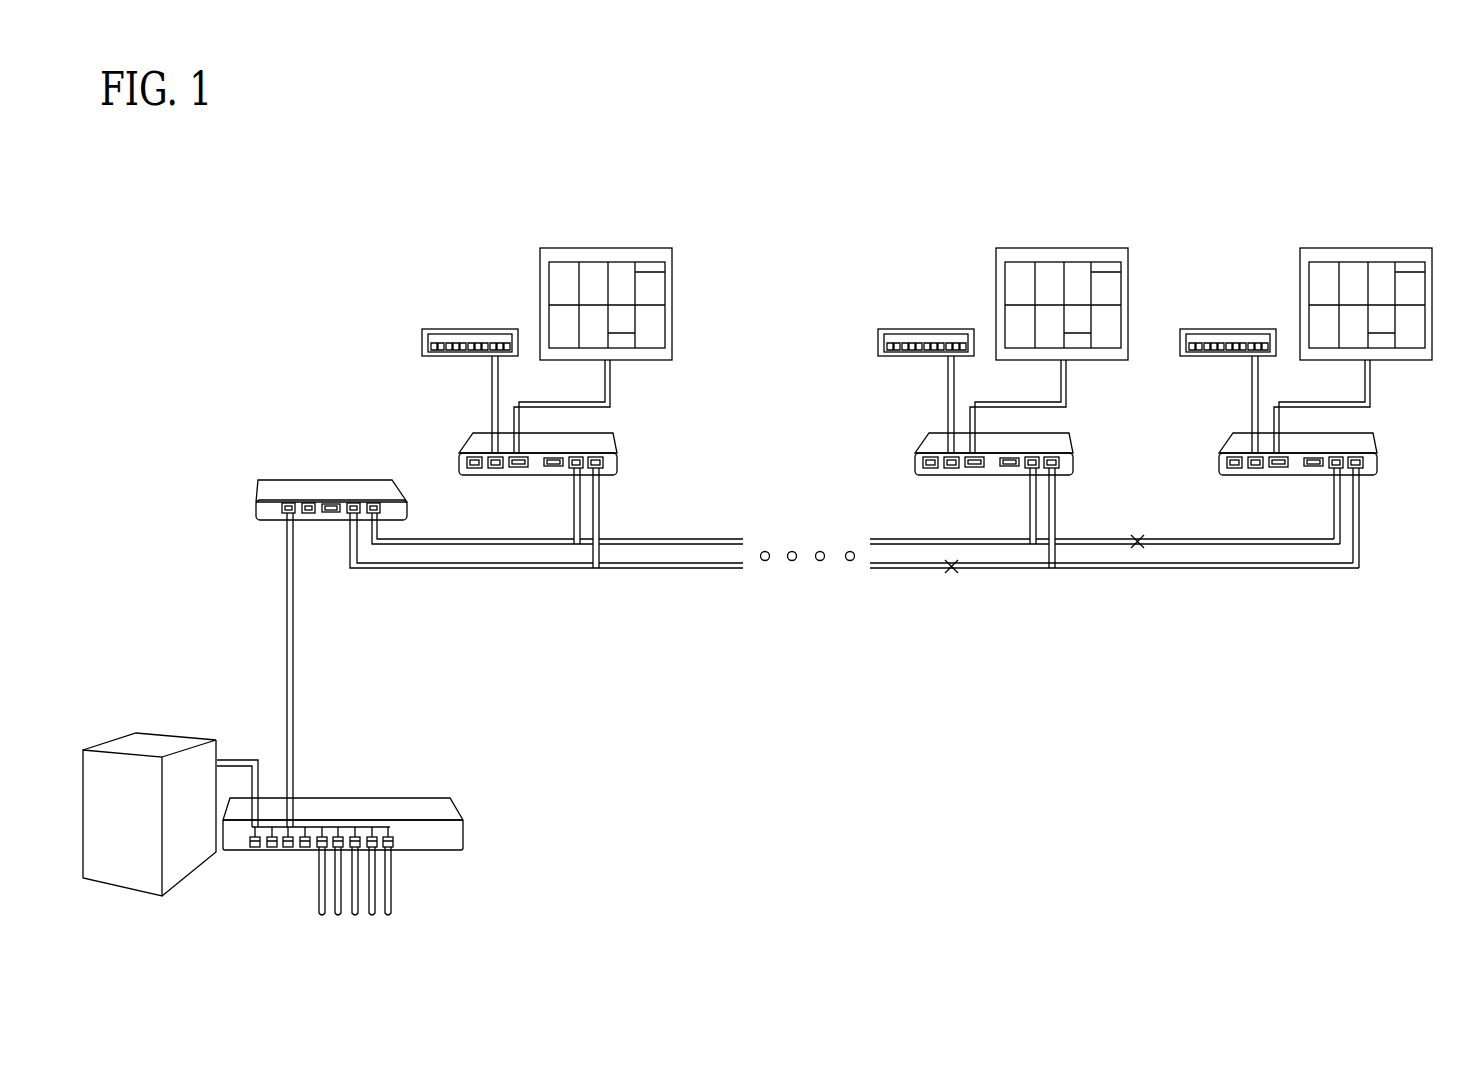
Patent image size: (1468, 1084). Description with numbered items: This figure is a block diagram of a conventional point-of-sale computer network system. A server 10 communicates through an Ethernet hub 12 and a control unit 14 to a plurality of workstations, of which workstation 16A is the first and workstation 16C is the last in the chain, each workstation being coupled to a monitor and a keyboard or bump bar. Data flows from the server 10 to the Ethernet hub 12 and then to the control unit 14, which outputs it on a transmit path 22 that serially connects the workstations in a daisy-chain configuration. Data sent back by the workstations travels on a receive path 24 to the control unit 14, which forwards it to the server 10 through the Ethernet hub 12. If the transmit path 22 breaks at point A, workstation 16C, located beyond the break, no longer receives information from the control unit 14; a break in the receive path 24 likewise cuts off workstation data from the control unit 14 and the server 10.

The server 10 is at (193, 848).
The Ethernet hub 12 is at (420, 803).
The control unit 14 is at (318, 484).
The workstation 16A is at (583, 437).
The workstation 16C is at (1343, 476).
The transmit path 22 is at (443, 538).
The receive path 24 is at (463, 571).
The point A is at (1137, 540).